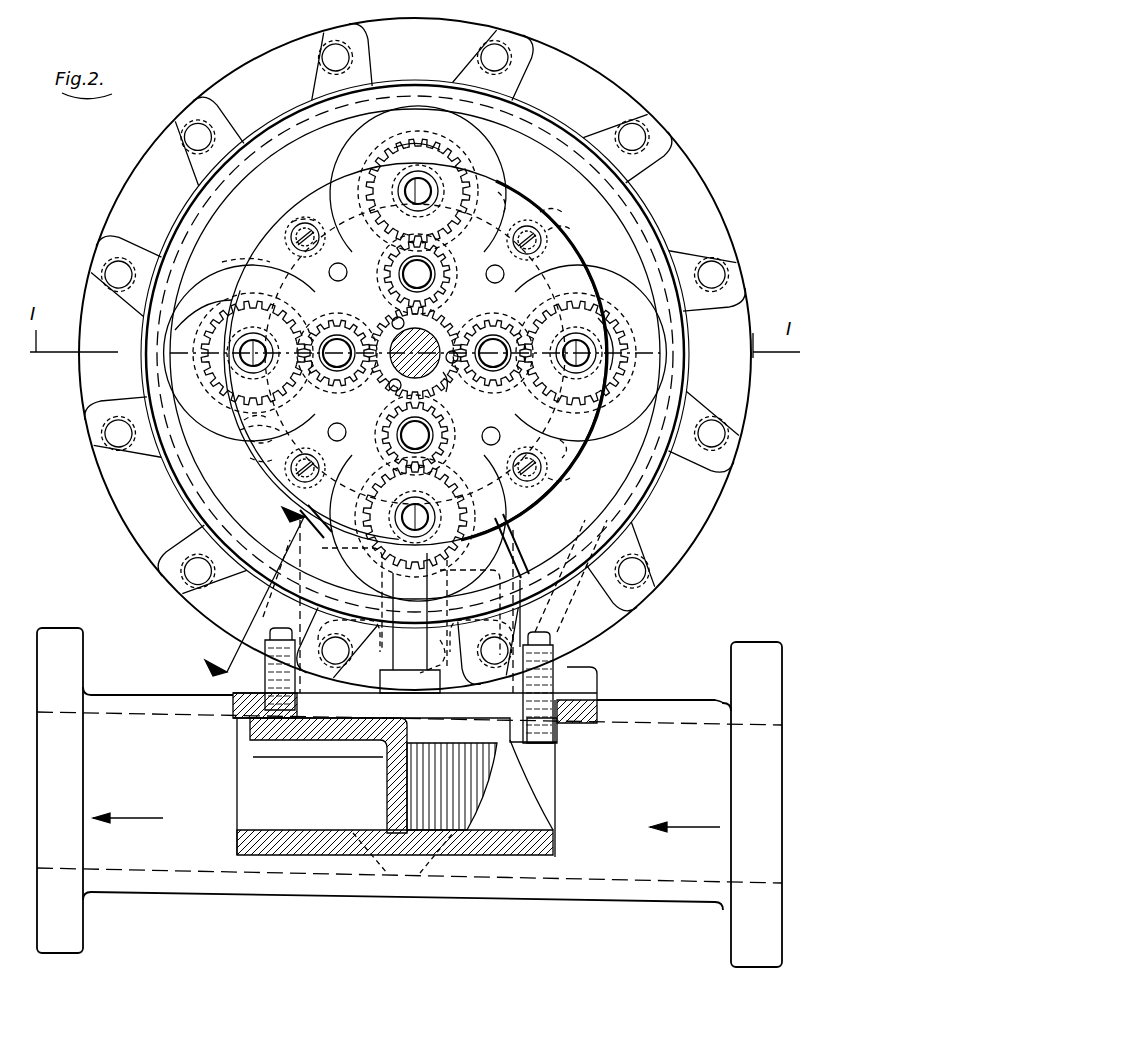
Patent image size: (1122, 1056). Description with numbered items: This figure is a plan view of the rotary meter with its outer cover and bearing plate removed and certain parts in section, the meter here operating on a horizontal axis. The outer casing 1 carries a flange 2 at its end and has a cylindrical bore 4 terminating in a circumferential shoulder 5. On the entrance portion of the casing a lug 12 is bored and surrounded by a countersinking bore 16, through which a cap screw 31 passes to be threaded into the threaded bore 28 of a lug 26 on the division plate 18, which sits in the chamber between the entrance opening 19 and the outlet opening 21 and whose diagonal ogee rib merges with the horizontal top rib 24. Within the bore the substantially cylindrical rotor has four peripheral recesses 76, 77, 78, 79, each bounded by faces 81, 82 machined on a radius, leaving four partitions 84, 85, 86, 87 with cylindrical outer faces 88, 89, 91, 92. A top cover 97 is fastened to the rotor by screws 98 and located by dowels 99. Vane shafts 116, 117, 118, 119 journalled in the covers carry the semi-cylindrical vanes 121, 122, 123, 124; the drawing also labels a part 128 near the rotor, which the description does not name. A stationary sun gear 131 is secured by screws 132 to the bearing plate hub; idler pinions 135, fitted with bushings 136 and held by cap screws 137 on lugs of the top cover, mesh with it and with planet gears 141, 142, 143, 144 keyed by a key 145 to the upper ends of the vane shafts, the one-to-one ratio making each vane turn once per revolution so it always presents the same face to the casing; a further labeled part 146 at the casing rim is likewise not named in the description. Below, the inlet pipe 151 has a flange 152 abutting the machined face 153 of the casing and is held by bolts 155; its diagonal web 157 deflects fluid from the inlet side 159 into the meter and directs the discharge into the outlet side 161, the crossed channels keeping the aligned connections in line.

The outer casing 1 is at (735, 322).
The flange 2 is at (716, 206).
The cylindrical bore 4 is at (576, 152).
The circumferential shoulder 5 is at (553, 132).
The lug 12 is at (445, 636).
The countersinking bore 16 is at (314, 690).
The division plate 18 is at (508, 548).
The entrance opening 19 is at (275, 570).
The outlet opening 21 is at (548, 562).
The horizontal top rib 24 is at (372, 588).
The lug 26 is at (438, 578).
The threaded bore 28 is at (355, 563).
The cap screw 31 is at (432, 697).
The recess 76 is at (380, 470).
The recess 77 is at (306, 302).
The recess 78 is at (372, 240).
The recess 79 is at (512, 326).
The recess face 81 is at (290, 246).
The recess face 82 is at (512, 200).
The partition 84 is at (262, 448).
The partition 85 is at (252, 252).
The partition 86 is at (548, 208).
The partition 87 is at (556, 477).
The cylindrical outer face 88 is at (262, 464).
The cylindrical outer face 89 is at (308, 226).
The cylindrical outer face 91 is at (562, 226).
The cylindrical outer face 92 is at (582, 448).
The top cover 97 is at (508, 192).
The screw 98 is at (300, 228).
The dowel 99 is at (332, 268).
The vane shaft 116 is at (420, 495).
The vane shaft 117 is at (258, 345).
The vane shaft 118 is at (414, 213).
The vane shaft 119 is at (576, 342).
The vane 121 is at (520, 462).
The vane 122 is at (195, 370).
The vane 123 is at (362, 145).
The vane 124 is at (585, 286).
The rim 128 is at (262, 438).
The stationary gear 131 is at (448, 386).
The screw 132 is at (405, 332).
The idler pinion 135 is at (382, 324).
The bushing 136 is at (388, 256).
The cap screw 137 is at (364, 312).
The planet gear 141 is at (512, 521).
The planet gear 142 is at (226, 310).
The planet gear 143 is at (418, 160).
The planet gear 144 is at (602, 334).
The key 145 is at (255, 372).
The flange ring 146 is at (612, 218).
The inlet pipe 151 is at (592, 900).
The flange 152 is at (572, 692).
The machined face 153 is at (572, 675).
The bolt 155 is at (265, 677).
The web 157 is at (375, 777).
The inlet side of pipe 159 is at (782, 788).
The outlet side of pipe 161 is at (42, 803).